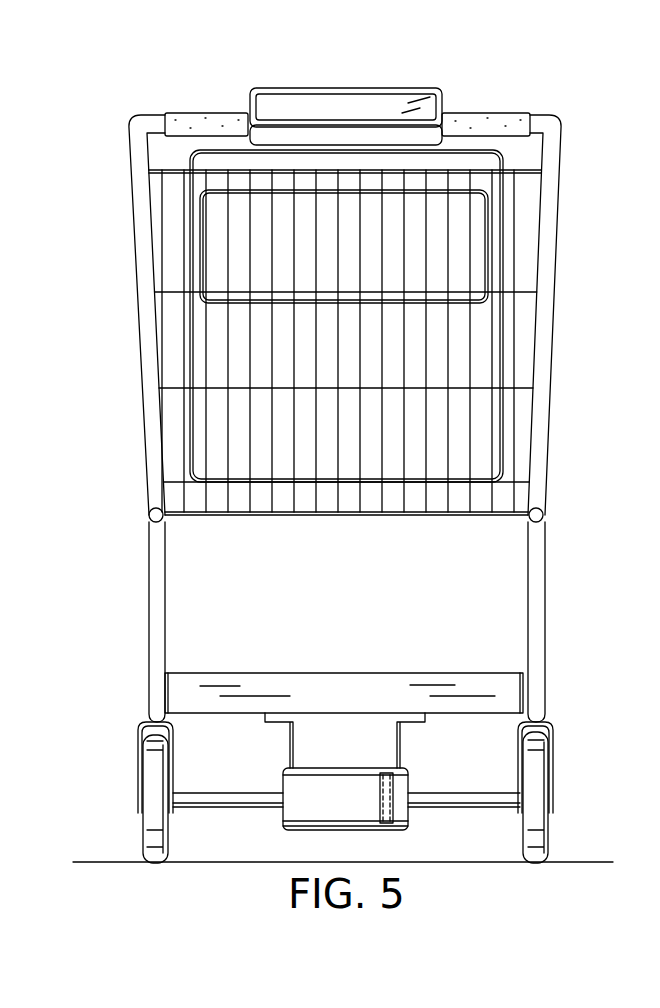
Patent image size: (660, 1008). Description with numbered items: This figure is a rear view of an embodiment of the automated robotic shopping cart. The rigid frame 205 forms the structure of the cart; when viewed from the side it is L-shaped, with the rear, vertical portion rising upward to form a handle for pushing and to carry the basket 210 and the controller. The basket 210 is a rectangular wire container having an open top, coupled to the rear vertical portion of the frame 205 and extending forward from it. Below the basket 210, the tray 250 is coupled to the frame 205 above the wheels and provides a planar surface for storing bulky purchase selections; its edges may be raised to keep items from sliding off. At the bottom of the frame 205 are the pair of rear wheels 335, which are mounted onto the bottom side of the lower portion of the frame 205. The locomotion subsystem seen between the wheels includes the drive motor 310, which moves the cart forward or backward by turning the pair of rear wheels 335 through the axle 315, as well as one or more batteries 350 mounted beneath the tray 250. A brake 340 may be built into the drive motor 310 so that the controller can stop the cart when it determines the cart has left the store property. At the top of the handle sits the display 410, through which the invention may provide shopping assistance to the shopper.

The frame 205 is at (157, 562).
The basket 210 is at (173, 290).
The tray 250 is at (220, 687).
The drive motor 310 is at (300, 813).
The axle 315 is at (458, 797).
The pair of rear wheels 335 is at (143, 848).
The brake 340 is at (390, 793).
The batteries 350 is at (343, 737).
The display 410 is at (398, 100).